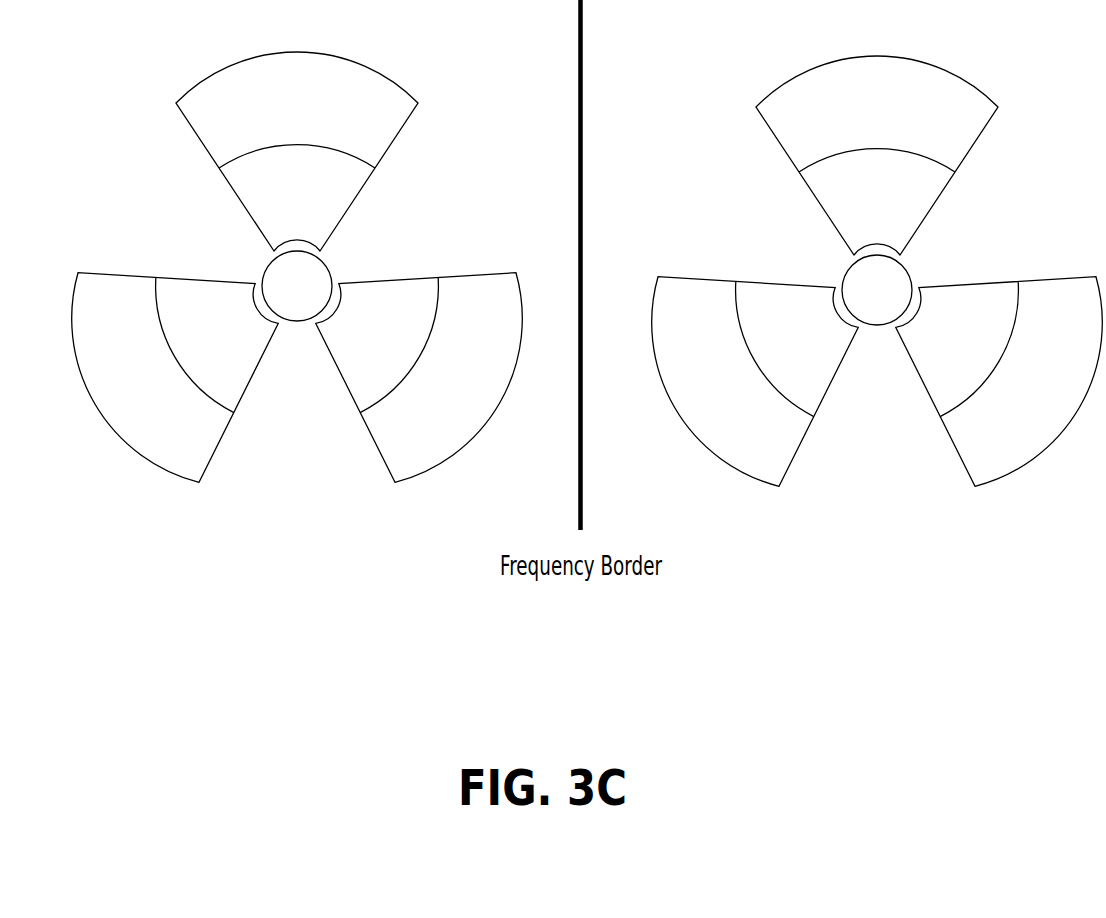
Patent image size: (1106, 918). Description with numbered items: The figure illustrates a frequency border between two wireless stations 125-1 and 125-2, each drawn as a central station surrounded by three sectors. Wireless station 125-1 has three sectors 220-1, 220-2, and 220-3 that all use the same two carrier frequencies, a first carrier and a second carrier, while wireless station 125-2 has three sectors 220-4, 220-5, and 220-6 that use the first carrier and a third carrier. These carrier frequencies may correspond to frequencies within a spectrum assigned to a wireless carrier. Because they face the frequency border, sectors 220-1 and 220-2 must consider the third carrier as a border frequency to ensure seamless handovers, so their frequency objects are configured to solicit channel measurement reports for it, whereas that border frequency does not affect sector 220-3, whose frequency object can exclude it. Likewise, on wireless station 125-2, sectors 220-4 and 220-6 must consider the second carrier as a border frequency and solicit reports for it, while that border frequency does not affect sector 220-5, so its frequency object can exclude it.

The sector 220-1 is at (196, 131).
The sector 220-2 is at (497, 278).
The sector 220-3 is at (212, 447).
The sector 220-4 is at (776, 136).
The sector 220-5 is at (1077, 283).
The sector 220-6 is at (792, 452).
The wireless station 125-1 is at (273, 294).
The wireless station 125-2 is at (853, 299).